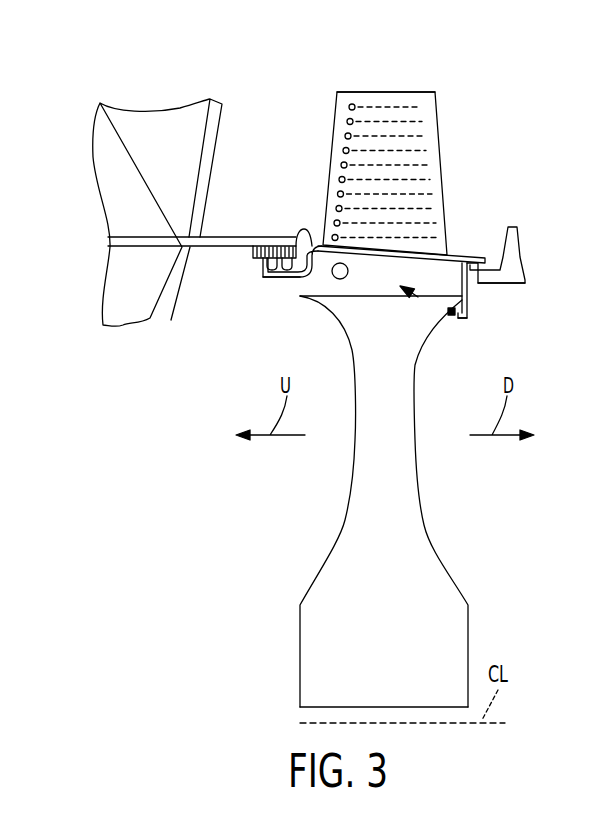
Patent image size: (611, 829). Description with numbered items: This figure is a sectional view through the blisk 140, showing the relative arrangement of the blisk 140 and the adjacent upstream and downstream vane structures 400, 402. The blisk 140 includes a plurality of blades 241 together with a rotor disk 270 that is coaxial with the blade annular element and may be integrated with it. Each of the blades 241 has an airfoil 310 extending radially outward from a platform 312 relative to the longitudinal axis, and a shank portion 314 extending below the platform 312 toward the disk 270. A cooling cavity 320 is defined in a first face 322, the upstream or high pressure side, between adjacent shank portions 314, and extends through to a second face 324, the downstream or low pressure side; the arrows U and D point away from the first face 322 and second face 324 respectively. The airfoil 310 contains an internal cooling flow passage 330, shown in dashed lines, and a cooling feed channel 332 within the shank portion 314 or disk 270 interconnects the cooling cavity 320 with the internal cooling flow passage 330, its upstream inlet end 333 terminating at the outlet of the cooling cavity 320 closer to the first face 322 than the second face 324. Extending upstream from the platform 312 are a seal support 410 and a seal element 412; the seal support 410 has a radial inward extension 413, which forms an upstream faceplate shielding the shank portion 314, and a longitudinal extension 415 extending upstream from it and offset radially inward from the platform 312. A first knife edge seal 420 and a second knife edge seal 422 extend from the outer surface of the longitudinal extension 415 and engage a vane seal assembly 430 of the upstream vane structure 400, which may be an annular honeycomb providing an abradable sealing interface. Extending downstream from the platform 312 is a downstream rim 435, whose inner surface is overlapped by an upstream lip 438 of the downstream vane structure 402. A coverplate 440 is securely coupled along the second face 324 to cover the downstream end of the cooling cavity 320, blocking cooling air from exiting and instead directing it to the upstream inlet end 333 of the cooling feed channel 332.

The blisk 140 is at (409, 132).
The blades 241 is at (420, 103).
The rotor disk 270 is at (381, 485).
The airfoil 310 is at (409, 148).
The platform 312 is at (414, 232).
The shank portion 314 is at (489, 309).
The cooling cavity 320 is at (450, 318).
The first face 322 is at (343, 532).
The second face 324 is at (420, 492).
The internal cooling flow passage 330 is at (412, 145).
The cooling feed channel 332 is at (343, 279).
The upstream inlet end 333 is at (306, 298).
The upstream vane structure 400 is at (145, 114).
The downstream vane structure 402 is at (531, 238).
The seal support 410 is at (286, 268).
The seal element 412 is at (246, 271).
The radial inward extension 413 is at (302, 232).
The longitudinal extension 415 is at (276, 279).
The first knife edge seal 420 is at (250, 217).
The second knife edge seal 422 is at (282, 246).
The vane seal assembly 430 is at (262, 246).
The downstream rim 435 is at (489, 233).
The upstream lip 438 is at (488, 277).
The coverplate 440 is at (467, 306).